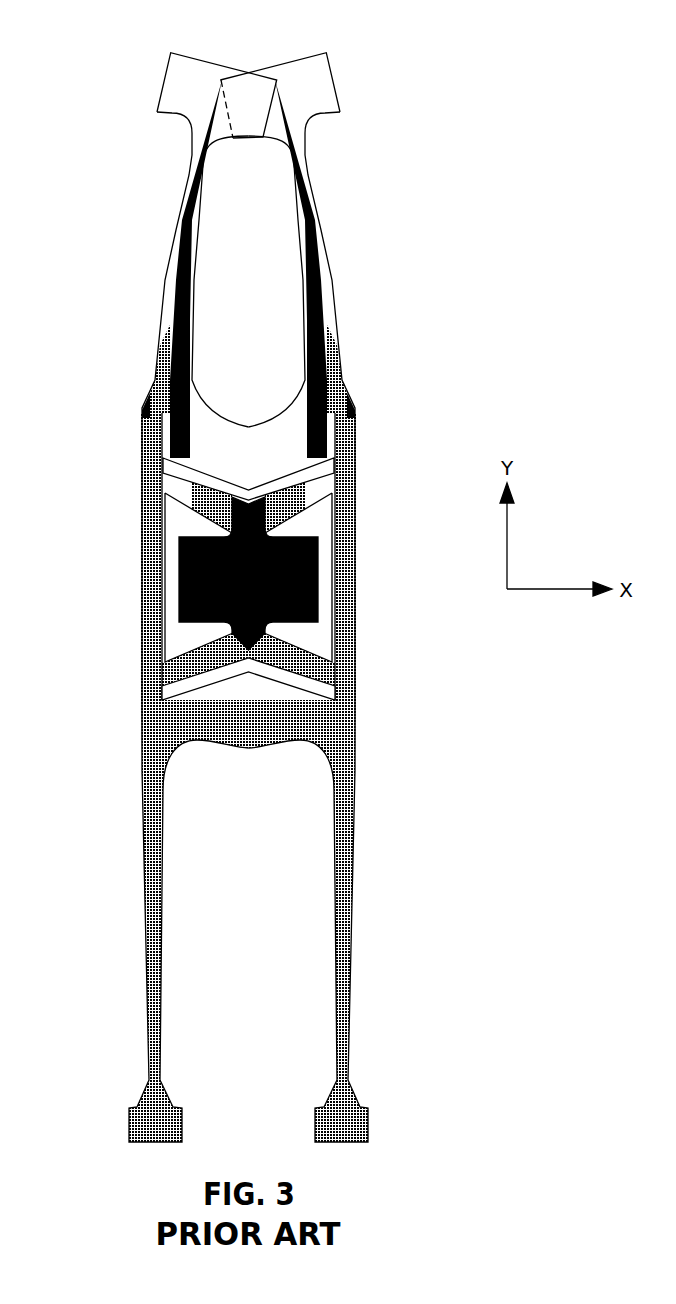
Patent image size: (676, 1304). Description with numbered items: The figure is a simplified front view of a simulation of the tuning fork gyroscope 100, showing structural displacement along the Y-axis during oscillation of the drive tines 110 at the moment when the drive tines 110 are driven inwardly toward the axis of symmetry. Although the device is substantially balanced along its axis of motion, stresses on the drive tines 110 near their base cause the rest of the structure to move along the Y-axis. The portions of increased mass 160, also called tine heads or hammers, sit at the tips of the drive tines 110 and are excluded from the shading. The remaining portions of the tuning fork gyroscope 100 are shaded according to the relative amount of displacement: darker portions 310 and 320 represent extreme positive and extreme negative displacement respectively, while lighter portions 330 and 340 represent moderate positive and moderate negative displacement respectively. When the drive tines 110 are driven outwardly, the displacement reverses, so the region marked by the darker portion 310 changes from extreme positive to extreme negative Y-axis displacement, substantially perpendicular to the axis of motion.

The tuning fork gyroscope 100 is at (281, 577).
The drive tines 110 is at (180, 217).
The portions of increased mass 160 is at (175, 105).
The darker portions 310 is at (141, 408).
The darker portions 320 is at (317, 387).
The lighter portions 330 is at (284, 502).
The lighter portions 340 is at (163, 447).